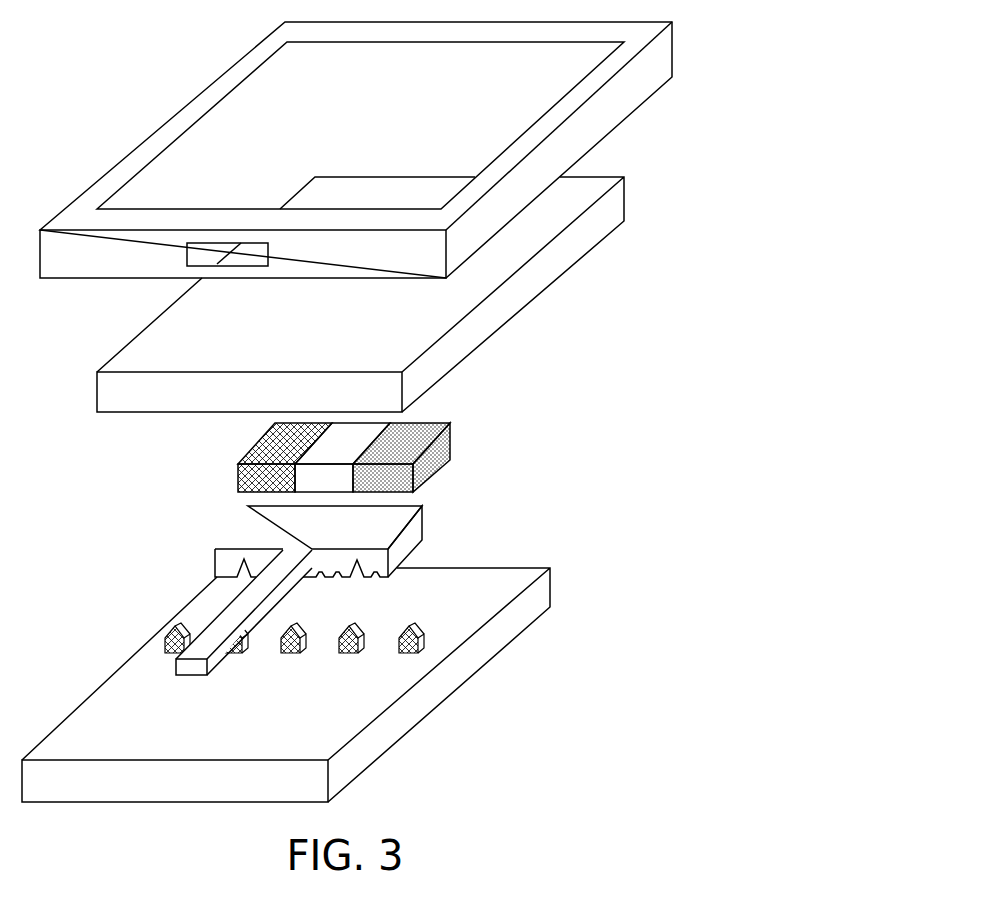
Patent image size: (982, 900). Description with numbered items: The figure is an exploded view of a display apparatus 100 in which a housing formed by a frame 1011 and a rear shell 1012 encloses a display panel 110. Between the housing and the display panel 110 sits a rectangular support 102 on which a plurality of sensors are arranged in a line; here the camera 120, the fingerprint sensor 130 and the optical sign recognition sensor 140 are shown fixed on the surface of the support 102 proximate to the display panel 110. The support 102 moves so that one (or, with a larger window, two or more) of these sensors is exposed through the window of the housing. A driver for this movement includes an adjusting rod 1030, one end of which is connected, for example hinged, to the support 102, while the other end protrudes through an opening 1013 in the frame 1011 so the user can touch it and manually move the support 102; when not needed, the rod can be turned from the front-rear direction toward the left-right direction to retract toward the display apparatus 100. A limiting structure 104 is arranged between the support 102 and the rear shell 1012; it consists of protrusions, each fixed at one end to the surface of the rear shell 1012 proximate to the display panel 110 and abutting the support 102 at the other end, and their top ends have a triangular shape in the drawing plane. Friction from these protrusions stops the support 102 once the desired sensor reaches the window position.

The display apparatus 100 is at (68, 58).
The frame 1011 is at (543, 150).
The opening 1013 is at (203, 257).
The display panel 110 is at (540, 266).
The camera 120 is at (270, 444).
The fingerprint sensor 130 is at (350, 442).
The optical sign recognition sensor 140 is at (440, 464).
The support 102 is at (407, 541).
The limiting structure 104 is at (425, 646).
The adjusting rod 1030 is at (208, 666).
The rear shell 1012 is at (408, 708).